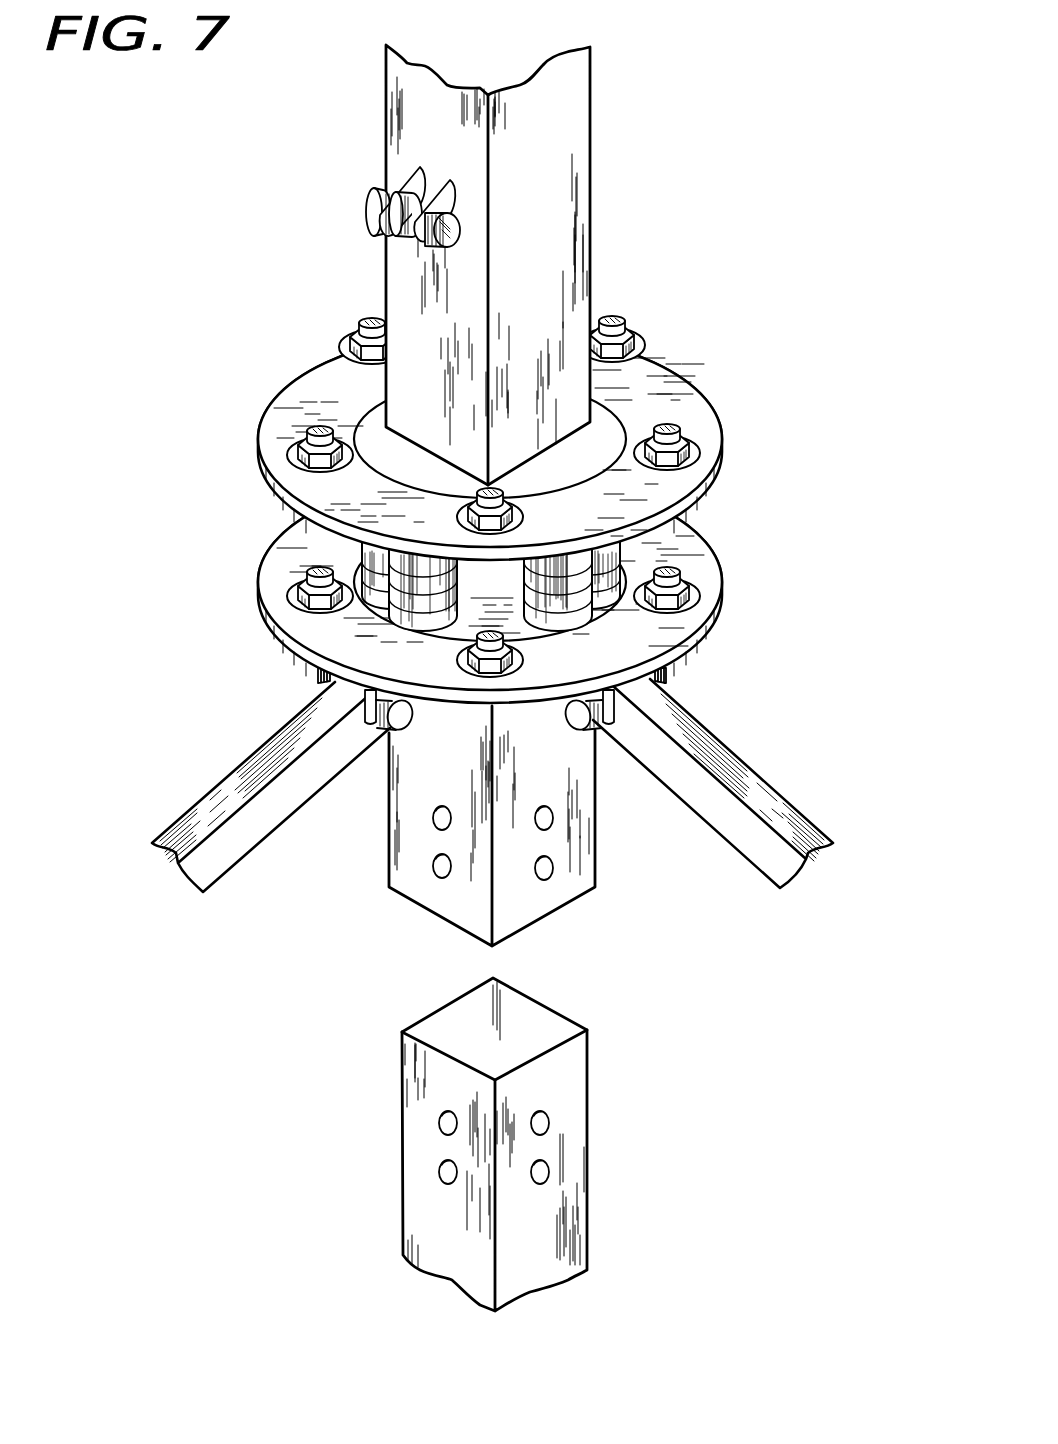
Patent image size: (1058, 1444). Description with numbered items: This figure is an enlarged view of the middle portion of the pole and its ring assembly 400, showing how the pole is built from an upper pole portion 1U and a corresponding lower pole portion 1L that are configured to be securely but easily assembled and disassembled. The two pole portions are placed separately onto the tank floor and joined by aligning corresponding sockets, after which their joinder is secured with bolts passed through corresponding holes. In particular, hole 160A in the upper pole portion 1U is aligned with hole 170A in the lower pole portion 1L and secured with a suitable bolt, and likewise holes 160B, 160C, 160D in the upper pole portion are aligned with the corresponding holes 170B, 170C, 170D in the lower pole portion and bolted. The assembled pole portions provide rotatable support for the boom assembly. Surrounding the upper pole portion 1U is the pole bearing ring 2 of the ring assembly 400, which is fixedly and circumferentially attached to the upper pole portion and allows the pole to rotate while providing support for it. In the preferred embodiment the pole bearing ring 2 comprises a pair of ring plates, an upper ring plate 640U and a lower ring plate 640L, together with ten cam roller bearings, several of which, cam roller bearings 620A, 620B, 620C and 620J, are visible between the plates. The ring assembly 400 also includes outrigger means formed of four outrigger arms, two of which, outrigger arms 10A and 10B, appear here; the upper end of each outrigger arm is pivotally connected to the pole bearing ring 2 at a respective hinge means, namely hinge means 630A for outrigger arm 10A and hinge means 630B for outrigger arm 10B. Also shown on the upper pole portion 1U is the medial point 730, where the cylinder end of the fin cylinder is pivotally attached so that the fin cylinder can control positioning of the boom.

The upper pole portion 1U is at (590, 190).
The lower pole portion 1L is at (548, 1005).
The pole bearing ring 2 is at (507, 438).
The ring assembly 400 is at (532, 524).
The medial point 730 is at (368, 228).
The upper ring plate 640U is at (700, 352).
The lower ring plate 640L is at (717, 585).
The cam roller bearing 620A is at (385, 607).
The cam roller bearing 620B is at (608, 613).
The cam roller bearing 620C is at (620, 548).
The cam roller bearing 620J is at (366, 542).
The hinge means 630A is at (318, 676).
The hinge means 630B is at (664, 672).
The outrigger arm 10A is at (229, 771).
The outrigger arm 10B is at (778, 789).
The hole 160A is at (432, 866).
The hole 160B is at (432, 818).
The hole 160C is at (554, 868).
The hole 160D is at (554, 818).
The hole 170A is at (438, 1170).
The hole 170B is at (438, 1122).
The hole 170C is at (550, 1170).
The hole 170D is at (550, 1122).